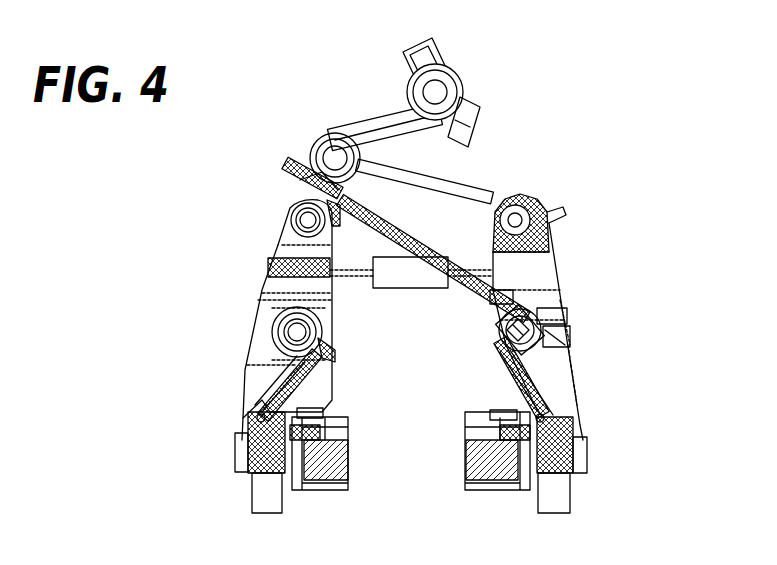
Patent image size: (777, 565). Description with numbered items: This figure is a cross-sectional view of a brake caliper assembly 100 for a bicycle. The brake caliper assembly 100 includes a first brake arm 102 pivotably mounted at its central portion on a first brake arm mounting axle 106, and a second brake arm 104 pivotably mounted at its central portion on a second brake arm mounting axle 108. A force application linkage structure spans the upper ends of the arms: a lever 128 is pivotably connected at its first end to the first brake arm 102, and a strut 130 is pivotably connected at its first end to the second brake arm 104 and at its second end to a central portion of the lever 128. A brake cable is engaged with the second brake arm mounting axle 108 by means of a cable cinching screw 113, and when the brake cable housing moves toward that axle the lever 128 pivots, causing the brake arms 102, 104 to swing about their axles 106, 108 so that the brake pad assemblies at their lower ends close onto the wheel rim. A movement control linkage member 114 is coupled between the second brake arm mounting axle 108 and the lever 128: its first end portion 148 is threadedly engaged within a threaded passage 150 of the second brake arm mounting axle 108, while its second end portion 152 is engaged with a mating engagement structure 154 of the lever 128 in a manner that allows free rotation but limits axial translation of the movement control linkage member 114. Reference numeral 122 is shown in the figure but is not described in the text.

The brake caliper assembly 100 is at (298, 92).
The first brake arm 102 is at (265, 296).
The second brake arm 104 is at (553, 270).
The first brake arm mounting axle 106 is at (277, 330).
The second brake arm mounting axle 108 is at (530, 312).
The cable cinching screw 113 is at (563, 327).
The movement control linkage member 114 is at (470, 297).
The cable attachment pivot 122 is at (482, 88).
The lever 128 is at (396, 118).
The strut 130 is at (467, 197).
The first end portion of the movement control linkage member 148 is at (527, 312).
The threaded passage 150 is at (560, 380).
The second end portion of the movement control linkage member 152 is at (340, 197).
The mating engagement structure 154 is at (318, 196).